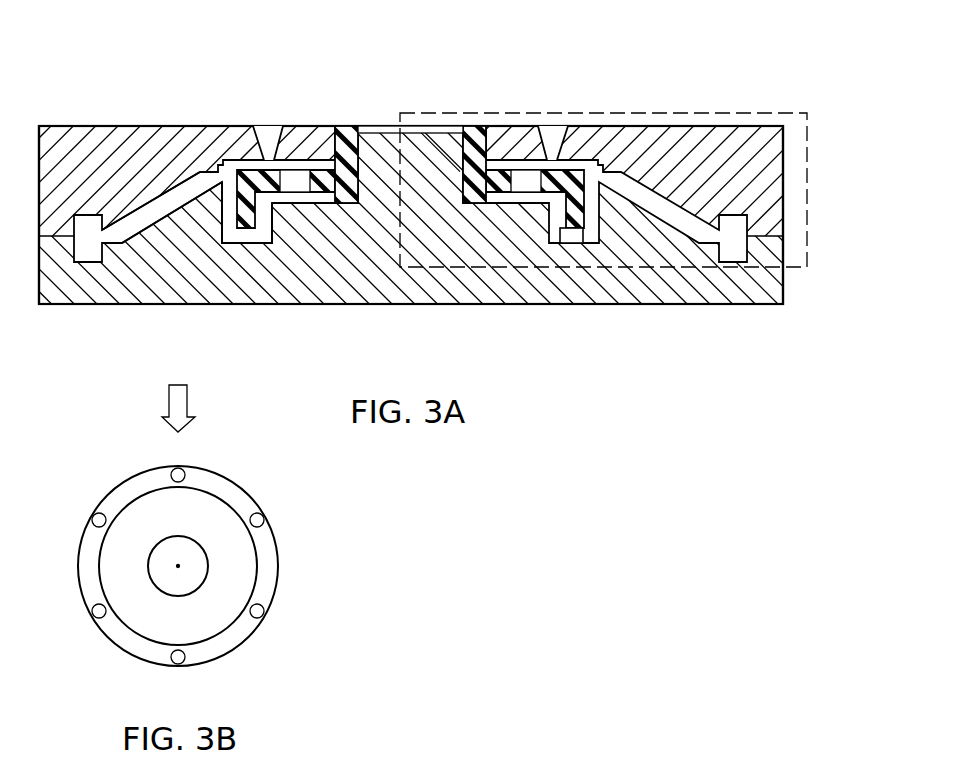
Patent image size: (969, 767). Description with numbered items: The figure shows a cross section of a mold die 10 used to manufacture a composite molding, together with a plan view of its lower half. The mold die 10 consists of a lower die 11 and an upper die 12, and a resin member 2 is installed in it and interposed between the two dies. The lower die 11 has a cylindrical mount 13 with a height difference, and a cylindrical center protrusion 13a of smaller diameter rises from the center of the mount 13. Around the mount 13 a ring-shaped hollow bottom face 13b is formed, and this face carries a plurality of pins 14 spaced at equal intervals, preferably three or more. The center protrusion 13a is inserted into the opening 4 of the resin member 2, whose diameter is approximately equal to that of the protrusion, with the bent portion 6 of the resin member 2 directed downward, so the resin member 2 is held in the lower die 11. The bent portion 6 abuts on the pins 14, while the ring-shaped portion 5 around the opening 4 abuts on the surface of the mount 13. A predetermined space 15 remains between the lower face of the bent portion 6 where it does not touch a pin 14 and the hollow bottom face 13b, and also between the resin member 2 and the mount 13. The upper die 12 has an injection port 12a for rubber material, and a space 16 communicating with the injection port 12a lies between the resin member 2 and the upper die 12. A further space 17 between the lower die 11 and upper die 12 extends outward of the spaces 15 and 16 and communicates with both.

In FIG. 3A, the resin member 2 is at (505, 163).
In FIG. 3A, the opening 4 is at (358, 133).
In FIG. 3A, the ring-shaped portion 5 is at (345, 132).
In FIG. 3A, the bent portion 6 is at (590, 165).
In FIG. 3A, the mold die 10 is at (870, 152).
In FIG. 3A, the lower die 11 is at (773, 244).
In FIG. 3A, the upper die 12 is at (773, 192).
In FIG. 3A, the injection port 12a is at (271, 128).
In FIG. 3A, the mount 13 is at (335, 234).
In FIG. 3B, the mount 13 is at (203, 615).
In FIG. 3A, the center protrusion 13a is at (441, 150).
In FIG. 3B, the center protrusion 13a is at (182, 537).
In FIG. 3A, the hollow bottom face 13b is at (238, 244).
In FIG. 3B, the hollow bottom face 13b is at (270, 560).
In FIG. 3A, the pins 14 is at (575, 244).
In FIG. 3B, the pins 14 is at (181, 468).
In FIG. 3A, the space 15 is at (222, 236).
In FIG. 3A, the space 16 is at (232, 167).
In FIG. 3A, the space 17 is at (158, 190).